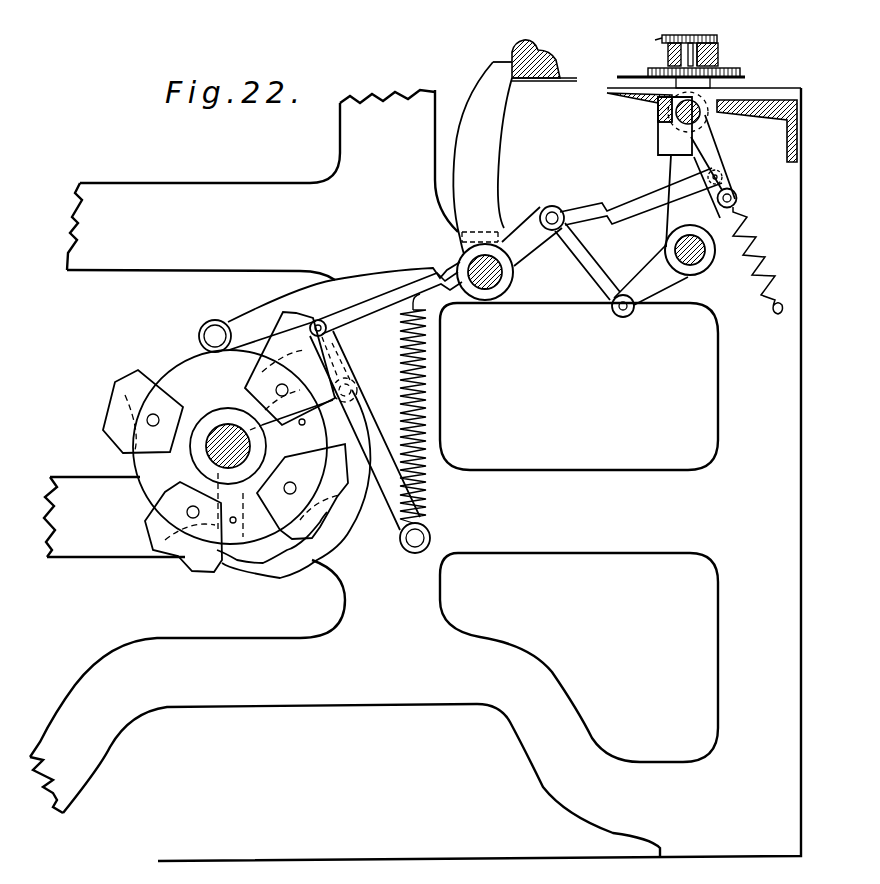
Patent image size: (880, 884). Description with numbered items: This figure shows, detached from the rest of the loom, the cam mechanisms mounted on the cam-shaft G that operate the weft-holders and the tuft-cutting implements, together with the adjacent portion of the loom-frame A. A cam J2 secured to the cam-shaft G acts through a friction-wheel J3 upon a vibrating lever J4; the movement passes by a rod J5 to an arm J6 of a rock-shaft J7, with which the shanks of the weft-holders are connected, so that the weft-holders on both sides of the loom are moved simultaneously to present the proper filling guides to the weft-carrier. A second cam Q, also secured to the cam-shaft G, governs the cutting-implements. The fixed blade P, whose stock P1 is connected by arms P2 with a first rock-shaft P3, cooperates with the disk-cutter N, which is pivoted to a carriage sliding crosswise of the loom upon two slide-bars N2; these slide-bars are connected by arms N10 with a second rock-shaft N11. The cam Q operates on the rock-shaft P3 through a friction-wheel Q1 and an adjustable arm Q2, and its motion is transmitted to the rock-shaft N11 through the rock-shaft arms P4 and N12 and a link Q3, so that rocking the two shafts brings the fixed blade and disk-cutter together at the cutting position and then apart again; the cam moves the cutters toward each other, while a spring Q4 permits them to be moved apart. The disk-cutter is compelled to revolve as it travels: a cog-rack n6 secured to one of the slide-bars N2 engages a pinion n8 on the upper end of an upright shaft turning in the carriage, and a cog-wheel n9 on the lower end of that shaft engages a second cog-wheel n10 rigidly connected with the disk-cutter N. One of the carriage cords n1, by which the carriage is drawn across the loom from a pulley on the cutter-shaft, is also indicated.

The frame A is at (415, 474).
The cam-shaft G is at (228, 446).
The cam J2 is at (225, 442).
The friction-wheel J3 is at (360, 382).
The vibrating lever J4 is at (370, 436).
The rod J5 is at (520, 251).
The arm J6 is at (724, 153).
The rock-shaft J7 is at (674, 122).
The cam Q is at (293, 484).
The friction-wheel Q1 is at (198, 337).
The arm Q2 is at (344, 306).
The link Q3 is at (585, 261).
The spring Q4 is at (430, 383).
The fixed blade P is at (545, 65).
The stock P1 is at (536, 45).
The arms P2 is at (482, 158).
The rock-shaft P3 is at (485, 300).
The rock-shaft arm P4 is at (533, 236).
The disk-cutter N is at (674, 74).
The slide-bars N2 is at (728, 50).
The arms N10 is at (728, 252).
The rock-shaft N11 is at (665, 250).
The rock-shaft arm N12 is at (650, 281).
The cord n1 is at (703, 54).
The cog-rack n6 is at (645, 39).
The pinion n8 is at (689, 29).
The cog-wheel n9 is at (693, 83).
The cog-wheel n10 is at (746, 73).